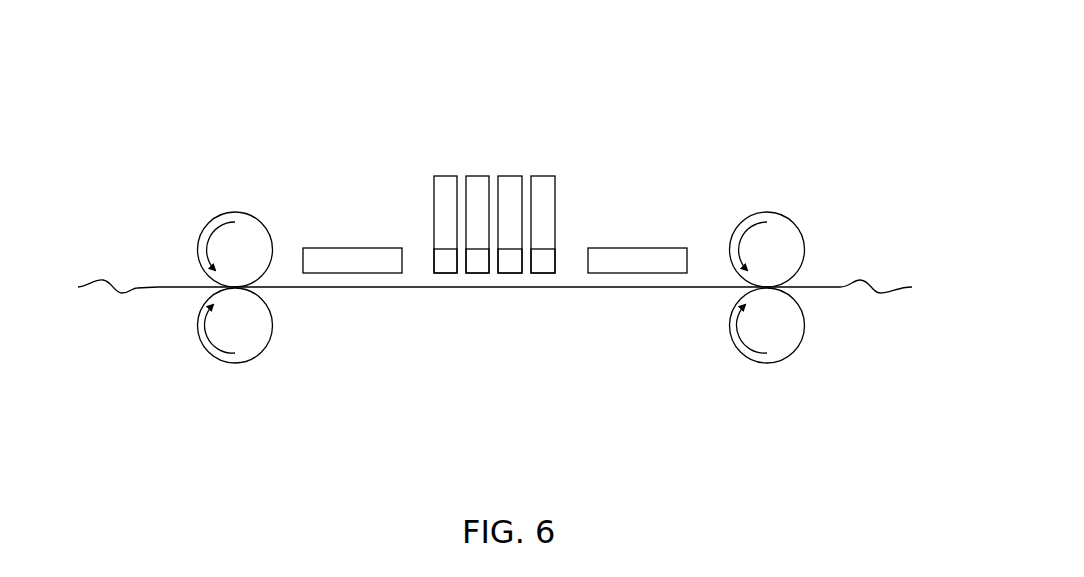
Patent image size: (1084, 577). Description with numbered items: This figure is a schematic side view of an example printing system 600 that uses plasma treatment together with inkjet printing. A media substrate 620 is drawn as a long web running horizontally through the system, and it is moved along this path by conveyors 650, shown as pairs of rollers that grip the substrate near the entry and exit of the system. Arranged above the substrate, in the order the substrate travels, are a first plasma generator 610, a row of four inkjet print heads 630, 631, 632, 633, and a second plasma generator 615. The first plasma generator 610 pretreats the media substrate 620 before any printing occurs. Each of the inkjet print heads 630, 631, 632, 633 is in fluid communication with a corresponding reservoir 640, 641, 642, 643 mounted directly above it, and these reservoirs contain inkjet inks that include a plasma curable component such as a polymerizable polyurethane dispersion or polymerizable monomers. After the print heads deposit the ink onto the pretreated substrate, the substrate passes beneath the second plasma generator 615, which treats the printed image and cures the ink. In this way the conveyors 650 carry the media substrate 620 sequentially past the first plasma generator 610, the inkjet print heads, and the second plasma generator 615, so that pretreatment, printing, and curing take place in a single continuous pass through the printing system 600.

The printing system 600 is at (180, 85).
The first plasma generator 610 is at (338, 260).
The second plasma generator 615 is at (643, 260).
The media substrate 620 is at (158, 287).
The inkjet print head 630 is at (449, 263).
The inkjet print head 631 is at (481, 263).
The inkjet print head 632 is at (512, 263).
The inkjet print head 633 is at (544, 263).
The reservoir 640 is at (447, 188).
The reservoir 641 is at (478, 188).
The reservoir 642 is at (513, 188).
The reservoir 643 is at (543, 188).
The conveyors 650 is at (255, 339).